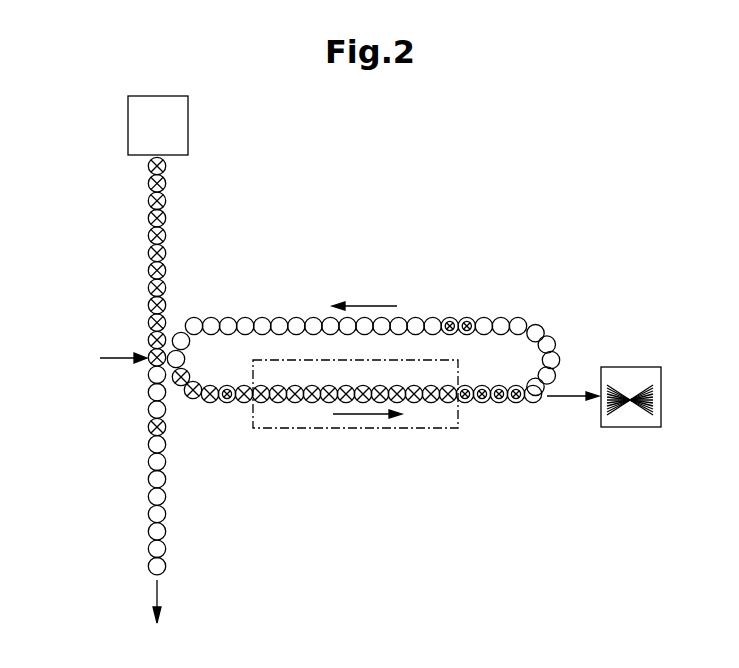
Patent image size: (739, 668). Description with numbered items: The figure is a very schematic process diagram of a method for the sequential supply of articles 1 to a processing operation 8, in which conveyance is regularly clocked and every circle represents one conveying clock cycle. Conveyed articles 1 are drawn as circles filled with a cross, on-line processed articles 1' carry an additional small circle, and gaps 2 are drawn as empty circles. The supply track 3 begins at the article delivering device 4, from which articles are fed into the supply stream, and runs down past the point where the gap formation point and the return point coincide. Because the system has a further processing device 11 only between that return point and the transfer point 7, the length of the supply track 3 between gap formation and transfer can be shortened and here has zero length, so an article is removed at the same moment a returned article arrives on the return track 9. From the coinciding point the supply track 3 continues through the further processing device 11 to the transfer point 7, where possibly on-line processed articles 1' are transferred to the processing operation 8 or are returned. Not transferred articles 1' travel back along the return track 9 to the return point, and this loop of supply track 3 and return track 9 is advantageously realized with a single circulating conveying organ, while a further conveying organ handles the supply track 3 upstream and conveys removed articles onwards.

The articles 1 is at (121, 390).
The on-line processed articles 1' is at (560, 444).
The gaps 2 is at (414, 325).
The supply track 3 is at (211, 410).
The article delivering device 4 is at (142, 127).
The transfer point 7 is at (537, 412).
The processing operation 8 is at (628, 355).
The return track 9 is at (255, 300).
The further processing device 11 is at (345, 428).